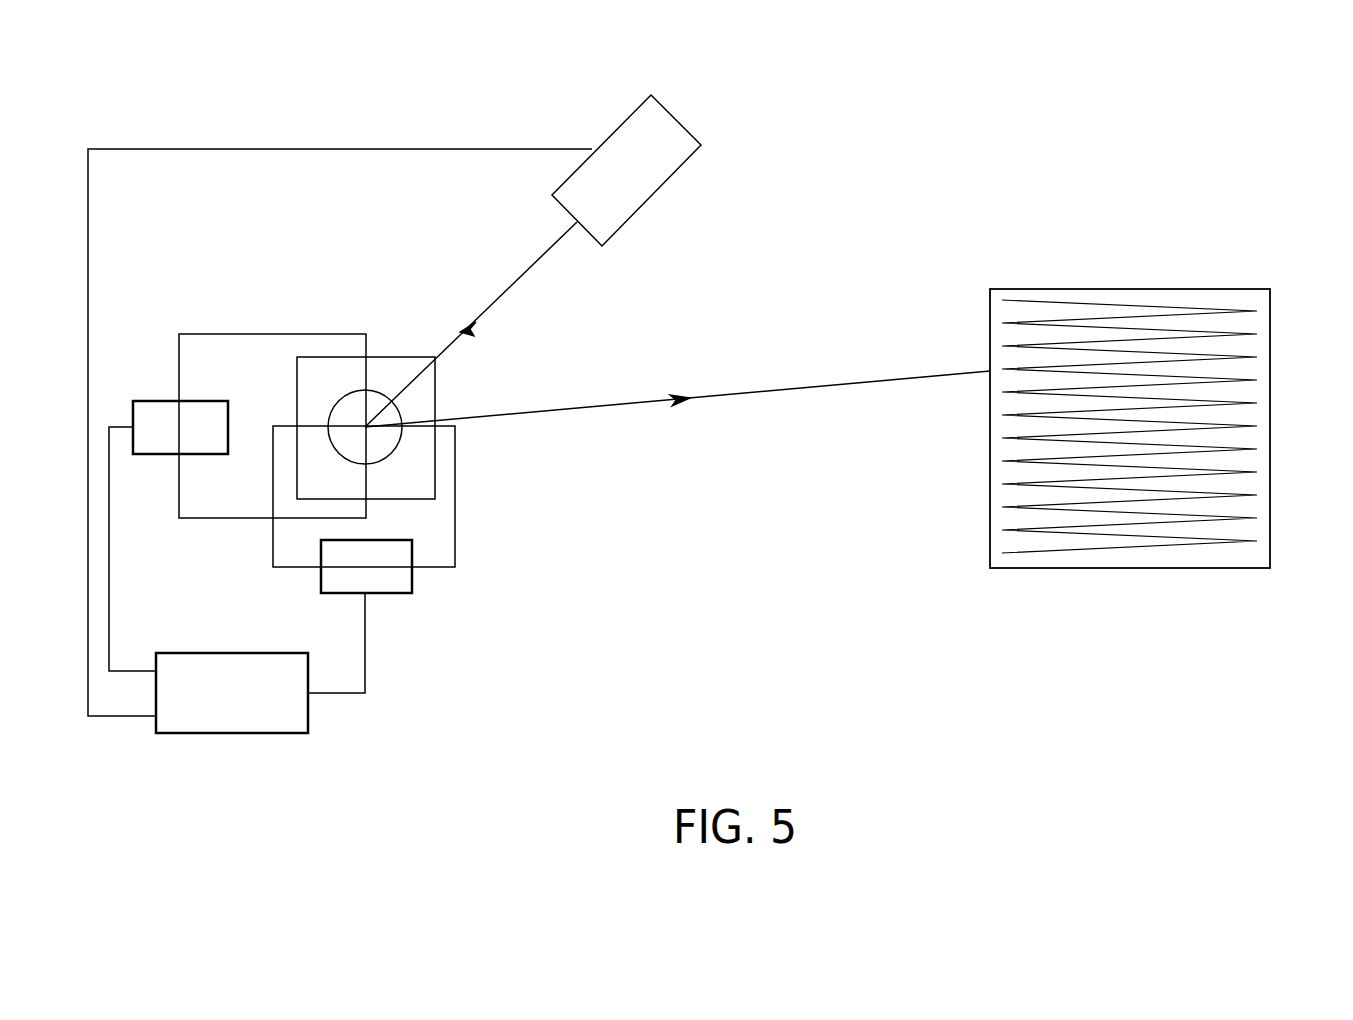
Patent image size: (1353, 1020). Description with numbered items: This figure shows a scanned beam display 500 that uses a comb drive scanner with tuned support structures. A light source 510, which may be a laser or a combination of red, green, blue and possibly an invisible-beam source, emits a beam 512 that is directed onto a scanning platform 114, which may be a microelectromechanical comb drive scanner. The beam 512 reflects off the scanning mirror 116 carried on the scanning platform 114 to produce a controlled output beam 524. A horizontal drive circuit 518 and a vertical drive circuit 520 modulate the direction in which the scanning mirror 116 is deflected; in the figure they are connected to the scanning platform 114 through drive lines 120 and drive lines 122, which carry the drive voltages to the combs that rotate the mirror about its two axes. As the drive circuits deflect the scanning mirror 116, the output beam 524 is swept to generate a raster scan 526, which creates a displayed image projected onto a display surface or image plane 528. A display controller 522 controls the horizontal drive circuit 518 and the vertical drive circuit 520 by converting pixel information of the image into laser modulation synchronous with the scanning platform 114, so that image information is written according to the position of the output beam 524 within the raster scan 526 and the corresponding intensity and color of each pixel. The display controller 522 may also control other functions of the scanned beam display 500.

The scanned beam display 500 is at (1175, 150).
The light source 510 is at (682, 122).
The beam 512 is at (516, 272).
The scanning platform 114 is at (400, 357).
The scanning mirror 116 is at (385, 458).
The drive lines 120 is at (254, 334).
The drive lines 122 is at (455, 519).
The vertical drive circuit 520 is at (170, 401).
The horizontal drive circuit 518 is at (412, 585).
The display controller 522 is at (308, 718).
The output beam 524 is at (613, 405).
The raster scan 526 is at (1172, 303).
The display surface 528 is at (1270, 320).